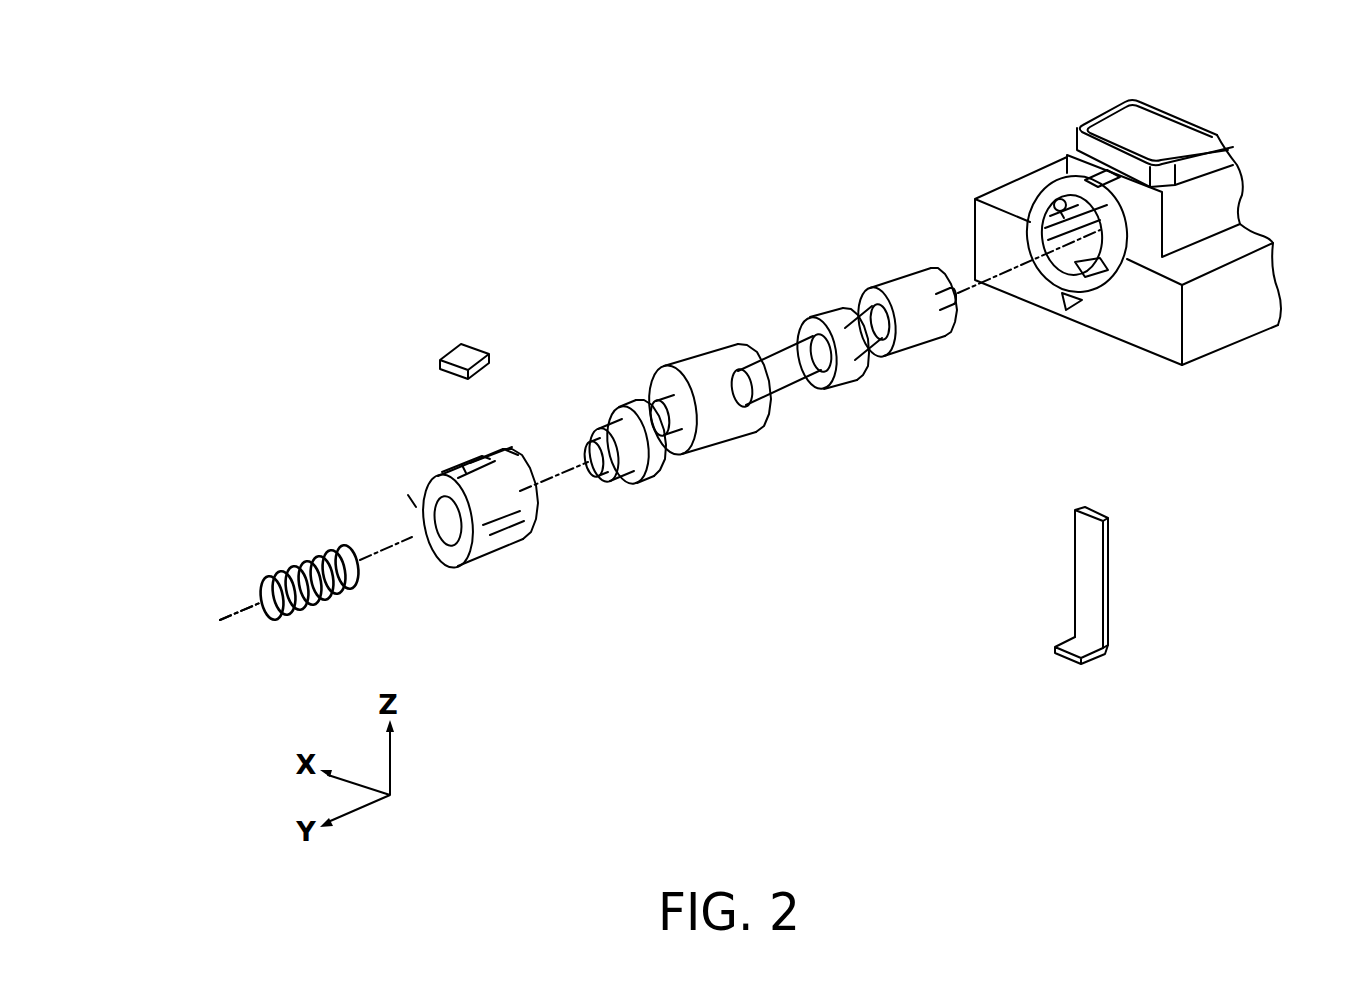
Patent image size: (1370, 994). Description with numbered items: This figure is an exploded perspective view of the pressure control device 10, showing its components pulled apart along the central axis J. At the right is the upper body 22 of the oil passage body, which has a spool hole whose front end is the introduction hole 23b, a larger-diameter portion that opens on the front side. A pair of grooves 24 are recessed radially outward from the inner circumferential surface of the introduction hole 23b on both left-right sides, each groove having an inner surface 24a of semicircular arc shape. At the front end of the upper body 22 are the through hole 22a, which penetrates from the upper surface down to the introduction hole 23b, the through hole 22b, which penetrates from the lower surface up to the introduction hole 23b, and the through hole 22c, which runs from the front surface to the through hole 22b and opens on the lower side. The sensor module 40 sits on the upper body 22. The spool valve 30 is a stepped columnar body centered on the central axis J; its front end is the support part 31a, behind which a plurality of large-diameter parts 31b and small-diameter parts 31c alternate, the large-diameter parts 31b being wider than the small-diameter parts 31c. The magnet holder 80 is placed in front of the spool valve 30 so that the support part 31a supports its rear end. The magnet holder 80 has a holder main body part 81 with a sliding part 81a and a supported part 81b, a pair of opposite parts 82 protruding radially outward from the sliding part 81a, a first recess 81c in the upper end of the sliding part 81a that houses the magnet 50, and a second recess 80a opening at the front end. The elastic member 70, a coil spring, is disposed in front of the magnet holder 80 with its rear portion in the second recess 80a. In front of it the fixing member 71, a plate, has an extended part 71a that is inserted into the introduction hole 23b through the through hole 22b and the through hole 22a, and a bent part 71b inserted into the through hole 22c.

The pressure control device 10 is at (600, 135).
The upper body 22 is at (1160, 335).
The through hole 22a is at (1093, 170).
The through hole 22b is at (1100, 262).
The through hole 22c is at (1070, 307).
The introduction hole 23b is at (1055, 207).
The groove 24 is at (1032, 229).
The inner surface 24a is at (1065, 210).
The spool valve 30 is at (690, 365).
The support part 31a is at (628, 462).
The large-diameter part 31b is at (722, 428).
The small-diameter part 31c is at (745, 385).
The sensor module 40 is at (1165, 132).
The magnet 50 is at (463, 343).
The elastic member 70 is at (297, 562).
The fixing member 71 is at (973, 725).
The extended part 71a is at (1085, 568).
The bent part 71b is at (1077, 645).
The magnet holder 80 is at (500, 562).
The second recess 80a is at (455, 535).
The holder main body part 81 is at (593, 380).
The sliding part 81a is at (492, 486).
The supported part 81b is at (523, 483).
The first recess 81c is at (467, 466).
The opposite part 82 is at (412, 500).
The central axis J is at (256, 615).